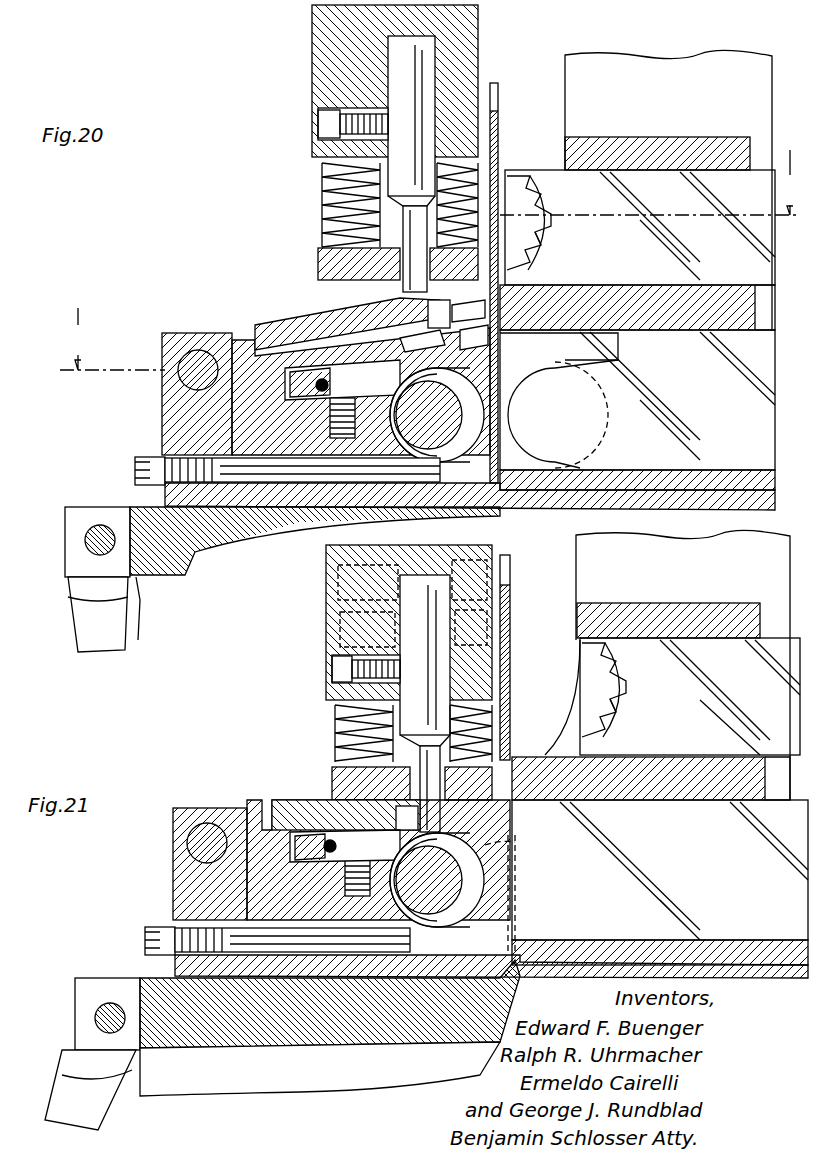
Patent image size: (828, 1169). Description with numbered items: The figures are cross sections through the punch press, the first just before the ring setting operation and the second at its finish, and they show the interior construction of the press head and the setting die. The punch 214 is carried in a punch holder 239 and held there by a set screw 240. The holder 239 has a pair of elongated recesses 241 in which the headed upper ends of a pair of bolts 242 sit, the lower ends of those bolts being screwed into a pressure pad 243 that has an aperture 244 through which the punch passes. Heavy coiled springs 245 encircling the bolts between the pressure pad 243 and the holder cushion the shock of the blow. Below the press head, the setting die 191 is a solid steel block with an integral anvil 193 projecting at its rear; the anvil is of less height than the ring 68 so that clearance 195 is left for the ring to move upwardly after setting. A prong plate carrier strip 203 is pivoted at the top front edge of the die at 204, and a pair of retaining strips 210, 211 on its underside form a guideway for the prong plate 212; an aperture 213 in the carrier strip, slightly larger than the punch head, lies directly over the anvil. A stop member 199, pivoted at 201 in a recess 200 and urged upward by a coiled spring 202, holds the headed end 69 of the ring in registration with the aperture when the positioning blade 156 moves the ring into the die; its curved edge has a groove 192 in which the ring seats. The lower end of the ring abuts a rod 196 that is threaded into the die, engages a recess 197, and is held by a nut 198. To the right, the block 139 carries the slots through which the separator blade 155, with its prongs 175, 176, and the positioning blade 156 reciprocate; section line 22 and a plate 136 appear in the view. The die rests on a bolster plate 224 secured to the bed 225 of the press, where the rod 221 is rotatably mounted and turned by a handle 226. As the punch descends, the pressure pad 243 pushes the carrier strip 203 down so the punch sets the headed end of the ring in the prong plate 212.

In FIG. 20, the section line 22 is at (431, 260).
In FIG. 20, the ring 68 is at (545, 396).
In FIG. 21, the ring 68 is at (433, 861).
In FIG. 20, the headed end 69 is at (508, 352).
In FIG. 20, the plate 136 is at (500, 118).
In FIG. 21, the plate 136 is at (510, 660).
In FIG. 21, the block 139 is at (748, 591).
In FIG. 20, the separator blade 155 is at (722, 248).
In FIG. 21, the separator blade 155 is at (777, 695).
In FIG. 20, the positioning blade 156 is at (730, 363).
In FIG. 21, the positioning blade 156 is at (757, 855).
In FIG. 20, the prong 175 is at (545, 196).
In FIG. 21, the prong 175 is at (620, 663).
In FIG. 20, the prong 176 is at (548, 245).
In FIG. 21, the prong 176 is at (623, 700).
In FIG. 20, the setting die 191 is at (162, 408).
In FIG. 21, the setting die 191 is at (173, 898).
In FIG. 20, the groove 192 is at (600, 432).
In FIG. 20, the anvil 193 is at (455, 412).
In FIG. 21, the anvil 193 is at (453, 888).
In FIG. 20, the clearance 195 is at (430, 450).
In FIG. 21, the clearance 195 is at (440, 900).
In FIG. 21, the rod 196 is at (350, 978).
In FIG. 20, the recess 197 is at (245, 506).
In FIG. 20, the nut 198 is at (150, 456).
In FIG. 21, the nut 198 is at (162, 928).
In FIG. 20, the stop member 199 is at (422, 415).
In FIG. 20, the recess 200 is at (286, 395).
In FIG. 21, the recess 200 is at (345, 846).
In FIG. 20, the pivot 201 is at (330, 410).
In FIG. 21, the pivot 201 is at (303, 790).
In FIG. 20, the coiled spring 202 is at (361, 391).
In FIG. 21, the coiled spring 202 is at (345, 894).
In FIG. 20, the prong plate carrier strip 203 is at (290, 322).
In FIG. 21, the prong plate carrier strip 203 is at (300, 800).
In FIG. 20, the pivot 204 is at (200, 352).
In FIG. 21, the pivot 204 is at (208, 828).
In FIG. 20, the retaining strip 210 is at (420, 318).
In FIG. 21, the retaining strip 210 is at (373, 823).
In FIG. 20, the retaining strip 211 is at (480, 339).
In FIG. 21, the retaining strip 211 is at (510, 848).
In FIG. 20, the prong plate 212 is at (424, 348).
In FIG. 21, the prong plate 212 is at (390, 813).
In FIG. 20, the aperture 213 is at (430, 310).
In FIG. 20, the punch 214 is at (320, 270).
In FIG. 21, the punch 214 is at (420, 778).
In FIG. 20, the rod 221 is at (95, 525).
In FIG. 21, the rod 221 is at (112, 1003).
In FIG. 20, the bolster plate 224 is at (175, 575).
In FIG. 21, the bolster plate 224 is at (375, 1045).
In FIG. 21, the bed 225 is at (247, 1081).
In FIG. 20, the handle 226 is at (78, 630).
In FIG. 21, the handle 226 is at (95, 1125).
In FIG. 20, the punch holder 239 is at (318, 42).
In FIG. 21, the punch holder 239 is at (330, 560).
In FIG. 20, the set screw 240 is at (318, 126).
In FIG. 21, the set screw 240 is at (332, 676).
In FIG. 21, the elongated recess 241 is at (330, 620).
In FIG. 21, the bolt 242 is at (510, 635).
In FIG. 21, the pressure pad 243 is at (530, 802).
In FIG. 21, the aperture 244 is at (469, 781).
In FIG. 21, the coiled spring 245 is at (338, 712).